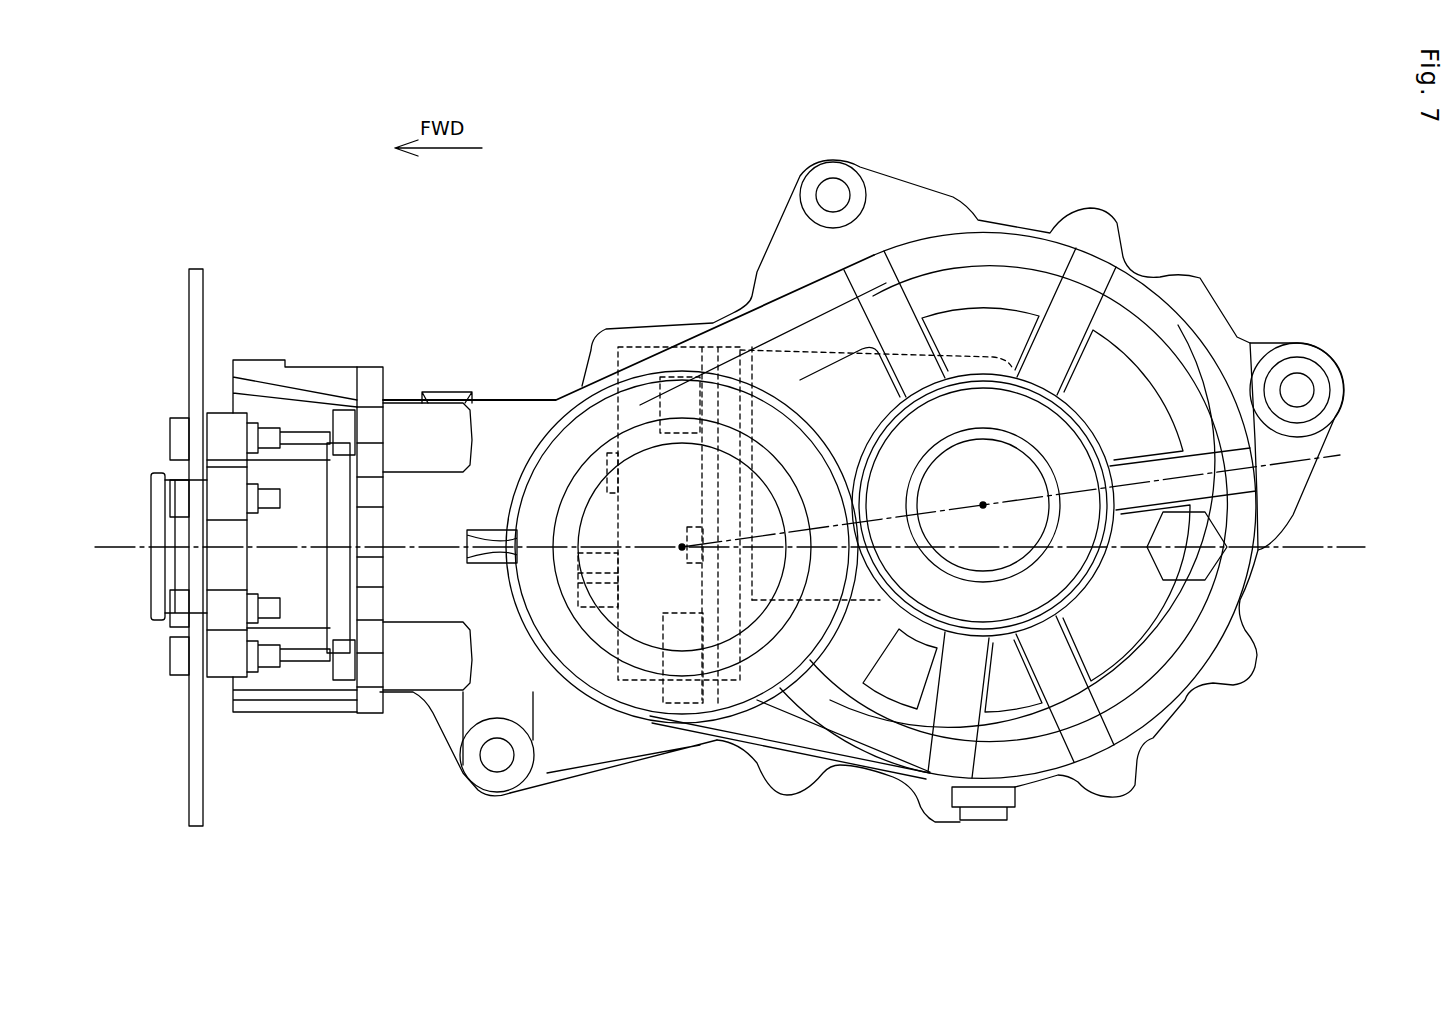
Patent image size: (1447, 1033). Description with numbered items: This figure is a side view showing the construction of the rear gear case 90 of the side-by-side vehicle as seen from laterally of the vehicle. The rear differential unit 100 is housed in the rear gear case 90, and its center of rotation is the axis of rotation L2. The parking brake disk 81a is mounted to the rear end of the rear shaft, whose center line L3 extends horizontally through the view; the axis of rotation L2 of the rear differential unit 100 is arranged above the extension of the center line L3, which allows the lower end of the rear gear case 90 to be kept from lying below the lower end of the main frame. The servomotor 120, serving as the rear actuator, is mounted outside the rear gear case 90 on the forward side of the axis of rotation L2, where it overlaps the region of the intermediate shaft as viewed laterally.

The rear gear case 90 is at (893, 200).
The rear differential unit 100 is at (1131, 342).
The parking brake disk 81a is at (212, 285).
The servomotor 120 is at (613, 417).
The axis of rotation L2 is at (985, 503).
The center line of the rear shaft L3 is at (122, 550).